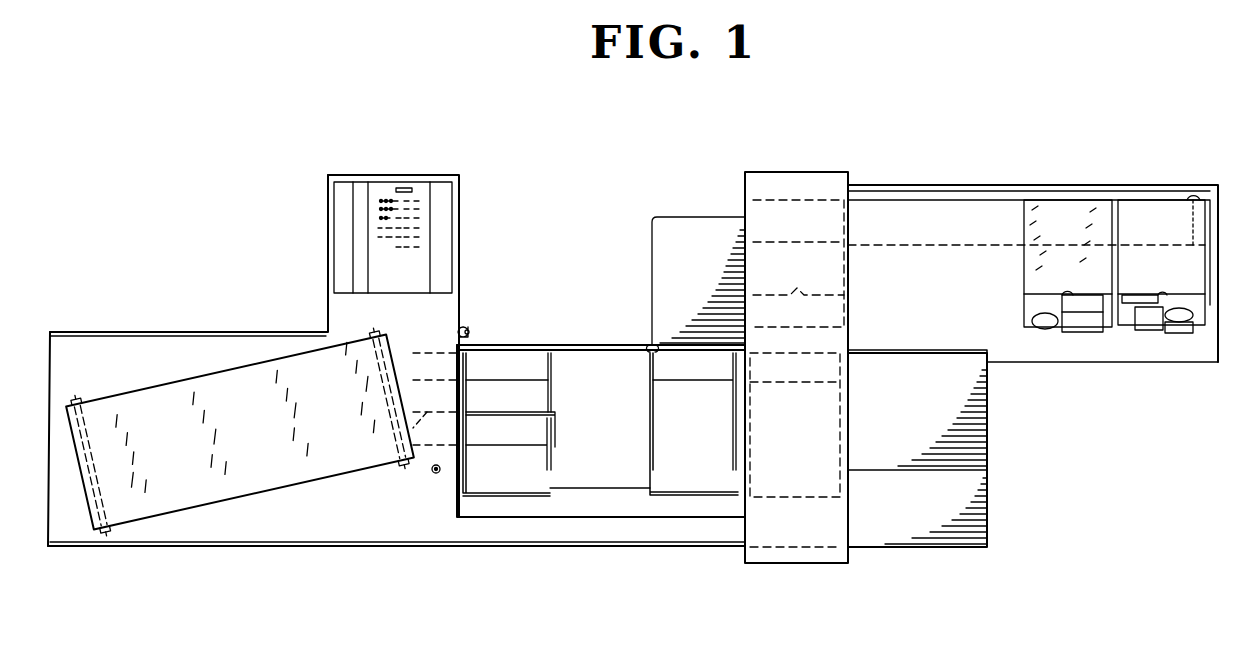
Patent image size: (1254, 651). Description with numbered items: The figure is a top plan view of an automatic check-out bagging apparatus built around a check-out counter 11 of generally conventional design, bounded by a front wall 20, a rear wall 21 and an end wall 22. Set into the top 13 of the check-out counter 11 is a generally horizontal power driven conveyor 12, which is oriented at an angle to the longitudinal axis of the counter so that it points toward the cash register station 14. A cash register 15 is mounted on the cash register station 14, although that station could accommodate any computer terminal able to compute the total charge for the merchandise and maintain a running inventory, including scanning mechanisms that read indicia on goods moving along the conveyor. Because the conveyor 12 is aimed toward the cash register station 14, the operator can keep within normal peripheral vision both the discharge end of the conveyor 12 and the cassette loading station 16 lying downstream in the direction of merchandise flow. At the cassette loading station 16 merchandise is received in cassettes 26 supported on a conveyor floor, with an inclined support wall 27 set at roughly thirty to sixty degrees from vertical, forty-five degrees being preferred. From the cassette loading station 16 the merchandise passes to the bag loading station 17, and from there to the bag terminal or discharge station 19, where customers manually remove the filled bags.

The check-out counter 11 is at (268, 516).
The power driven conveyor 12 is at (337, 455).
The top 13 is at (238, 528).
The cash register station 14 is at (428, 150).
The cash register 15 is at (441, 246).
The cassette loading station 16 is at (601, 442).
The bag loading station 17 is at (820, 472).
The bag terminal or discharge station 19 is at (1103, 197).
The front wall 20 is at (330, 548).
The rear wall 21 is at (232, 332).
The end wall 22 is at (44, 515).
The cassette 26 is at (525, 497).
The inclined support wall 27 is at (625, 484).